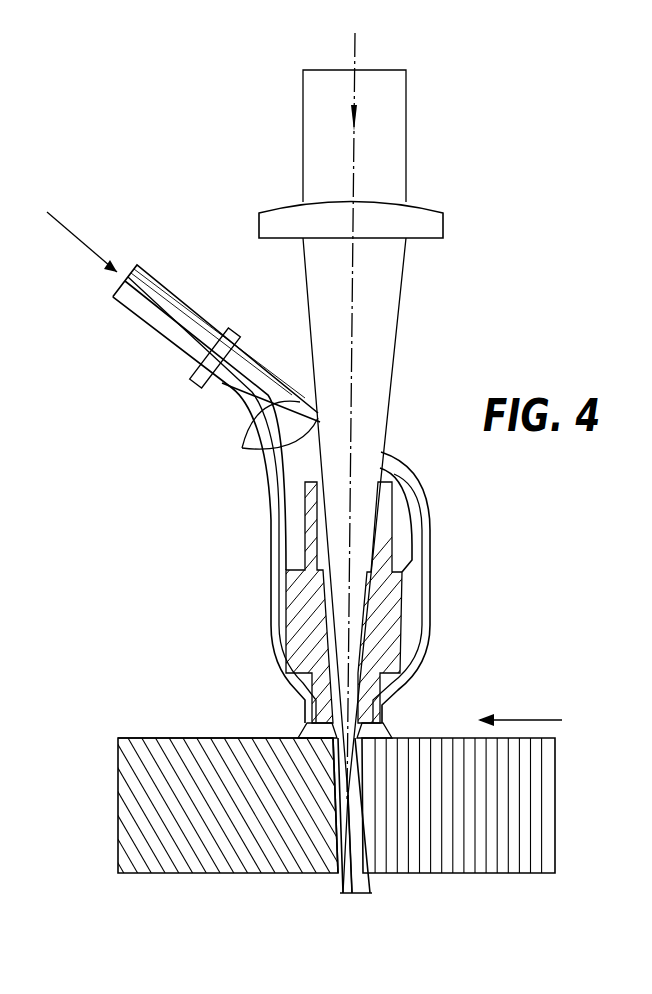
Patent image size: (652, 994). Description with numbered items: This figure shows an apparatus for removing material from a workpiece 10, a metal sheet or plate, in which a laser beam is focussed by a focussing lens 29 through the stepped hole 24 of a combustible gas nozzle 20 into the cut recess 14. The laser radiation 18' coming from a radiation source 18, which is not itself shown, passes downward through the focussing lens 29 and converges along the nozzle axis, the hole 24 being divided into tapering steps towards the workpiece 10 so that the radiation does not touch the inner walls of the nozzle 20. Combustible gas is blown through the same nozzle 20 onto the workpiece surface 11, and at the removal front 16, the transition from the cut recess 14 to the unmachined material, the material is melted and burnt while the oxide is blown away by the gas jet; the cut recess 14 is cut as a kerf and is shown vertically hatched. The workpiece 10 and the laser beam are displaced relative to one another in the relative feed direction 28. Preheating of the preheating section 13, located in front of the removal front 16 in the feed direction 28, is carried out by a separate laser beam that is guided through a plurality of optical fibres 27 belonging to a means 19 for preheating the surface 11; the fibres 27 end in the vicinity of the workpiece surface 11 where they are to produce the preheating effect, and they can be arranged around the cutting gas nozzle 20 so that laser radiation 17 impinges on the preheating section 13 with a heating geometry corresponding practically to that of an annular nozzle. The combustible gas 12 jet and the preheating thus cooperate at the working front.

The workpiece 10 is at (145, 815).
The workpiece surface 11 is at (175, 737).
The combustible gas 12 is at (373, 565).
The preheating section 13 is at (313, 745).
The cut recess 14 is at (362, 822).
The removal front 16 is at (337, 800).
The laser radiation 17 is at (308, 727).
The radiation source 18 is at (326, 416).
The laser radiation 18' is at (375, 136).
The means for preheating 19 is at (160, 320).
The nozzle for combustible gas 20 is at (373, 653).
The hole 24 is at (330, 652).
The optical fibres 27 is at (303, 407).
The relative feed direction 28 is at (533, 720).
The focussing lens 29 is at (445, 230).